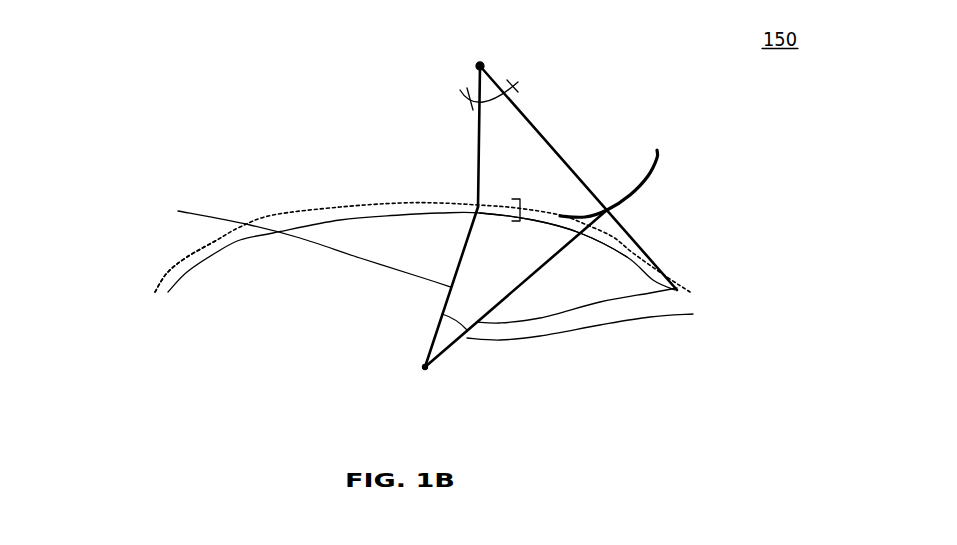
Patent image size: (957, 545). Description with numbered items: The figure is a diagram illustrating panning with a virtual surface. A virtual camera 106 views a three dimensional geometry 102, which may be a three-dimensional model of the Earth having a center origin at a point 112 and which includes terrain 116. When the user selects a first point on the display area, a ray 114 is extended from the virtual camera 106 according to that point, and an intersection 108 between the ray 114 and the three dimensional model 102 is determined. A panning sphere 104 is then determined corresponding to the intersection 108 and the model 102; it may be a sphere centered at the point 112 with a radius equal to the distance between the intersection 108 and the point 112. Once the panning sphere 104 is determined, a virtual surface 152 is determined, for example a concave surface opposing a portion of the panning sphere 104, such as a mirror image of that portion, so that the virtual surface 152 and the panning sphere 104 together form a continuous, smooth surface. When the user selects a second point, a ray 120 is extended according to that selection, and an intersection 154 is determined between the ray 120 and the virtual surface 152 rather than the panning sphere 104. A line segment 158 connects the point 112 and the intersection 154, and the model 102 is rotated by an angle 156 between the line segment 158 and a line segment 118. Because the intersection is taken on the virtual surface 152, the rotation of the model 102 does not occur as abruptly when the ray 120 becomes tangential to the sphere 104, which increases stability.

The three dimensional geometry 102 is at (178, 276).
The panning sphere 104 is at (178, 262).
The virtual camera 106 is at (482, 65).
The intersection 108 is at (477, 205).
The point 112 is at (423, 370).
The ray 114 is at (478, 158).
The terrain 116 is at (525, 201).
The line segment 118 is at (296, 243).
The ray 120 is at (537, 130).
The virtual surface 152 is at (645, 185).
The intersection 154 is at (610, 210).
The angle 156 is at (692, 292).
The line segment 158 is at (693, 314).